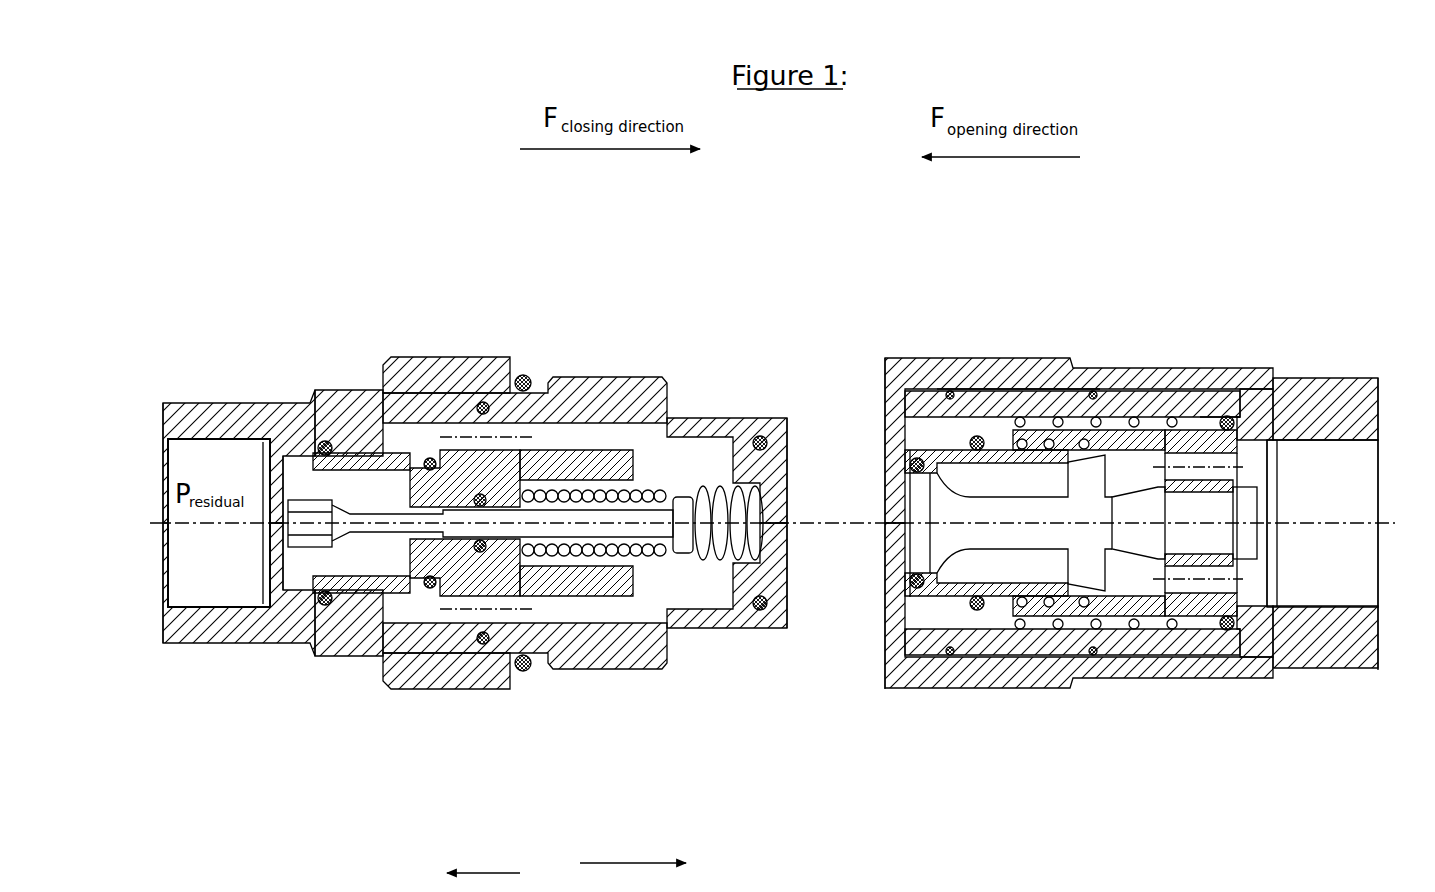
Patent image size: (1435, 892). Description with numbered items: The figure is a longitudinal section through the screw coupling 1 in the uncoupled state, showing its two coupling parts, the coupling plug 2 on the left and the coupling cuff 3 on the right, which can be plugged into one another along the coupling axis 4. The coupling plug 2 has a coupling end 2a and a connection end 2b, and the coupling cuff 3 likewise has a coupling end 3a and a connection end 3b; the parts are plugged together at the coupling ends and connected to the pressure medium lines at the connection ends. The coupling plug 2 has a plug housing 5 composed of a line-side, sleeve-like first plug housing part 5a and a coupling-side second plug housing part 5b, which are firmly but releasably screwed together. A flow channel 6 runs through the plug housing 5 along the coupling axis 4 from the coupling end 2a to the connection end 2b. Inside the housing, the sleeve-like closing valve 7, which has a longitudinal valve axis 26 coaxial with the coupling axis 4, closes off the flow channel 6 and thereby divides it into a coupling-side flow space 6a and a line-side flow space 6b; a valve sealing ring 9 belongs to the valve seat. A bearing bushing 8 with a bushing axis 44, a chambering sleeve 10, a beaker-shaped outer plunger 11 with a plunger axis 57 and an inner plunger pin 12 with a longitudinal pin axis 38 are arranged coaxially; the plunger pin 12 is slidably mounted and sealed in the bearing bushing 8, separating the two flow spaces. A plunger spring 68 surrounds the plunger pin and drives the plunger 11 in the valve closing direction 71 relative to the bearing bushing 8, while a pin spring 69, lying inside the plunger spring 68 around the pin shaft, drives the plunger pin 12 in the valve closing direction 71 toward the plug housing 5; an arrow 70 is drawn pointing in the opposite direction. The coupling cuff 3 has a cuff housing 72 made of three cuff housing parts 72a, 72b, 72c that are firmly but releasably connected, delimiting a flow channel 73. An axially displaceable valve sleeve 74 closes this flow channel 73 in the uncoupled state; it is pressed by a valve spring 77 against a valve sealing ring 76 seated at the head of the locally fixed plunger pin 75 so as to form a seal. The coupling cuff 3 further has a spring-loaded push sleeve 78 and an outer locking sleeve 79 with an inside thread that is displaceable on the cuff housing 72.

The screw coupling 1 is at (307, 154).
The coupling plug 2 is at (471, 185).
The coupling end 2a is at (799, 459).
The connection end 2b is at (149, 436).
The coupling cuff 3 is at (1148, 185).
The coupling end 3a is at (875, 450).
The connection end 3b is at (1392, 403).
The coupling axis 4 is at (1320, 527).
The longitudinal valve axis 26 is at (223, 523).
The longitudinal pin axis 38 is at (219, 523).
The bushing axis 44 is at (219, 523).
The plunger axis 57 is at (219, 523).
The plug housing 5 is at (216, 413).
The first plug housing part 5a is at (360, 417).
The second plug housing part 5b is at (617, 407).
The flow channel 6 is at (237, 487).
The coupling-side flow space 6a is at (682, 457).
The line-side flow space 6b is at (294, 468).
The closing valve 7 is at (362, 597).
The bearing bushing 8 is at (583, 588).
The valve sealing ring 9 is at (430, 588).
The chambering sleeve 10 is at (448, 562).
The plunger 11 is at (758, 583).
The plunger pin 12 is at (683, 540).
The plunger spring 68 is at (733, 487).
The pin spring 69 is at (575, 488).
The closing direction arrow 70 is at (483, 857).
The valve closing direction 71 is at (633, 848).
The cuff housing 72 is at (1272, 403).
The cuff housing part 72a is at (1328, 400).
The cuff housing part 72b is at (1198, 418).
The cuff housing part 72c is at (1045, 403).
The flow channel 73 is at (1136, 587).
The valve sleeve 74 is at (1013, 598).
The plunger pin 75 is at (1053, 537).
The valve sealing ring 76 is at (910, 592).
The valve spring 77 is at (975, 610).
The push sleeve 78 is at (908, 387).
The locking sleeve 79 is at (977, 372).